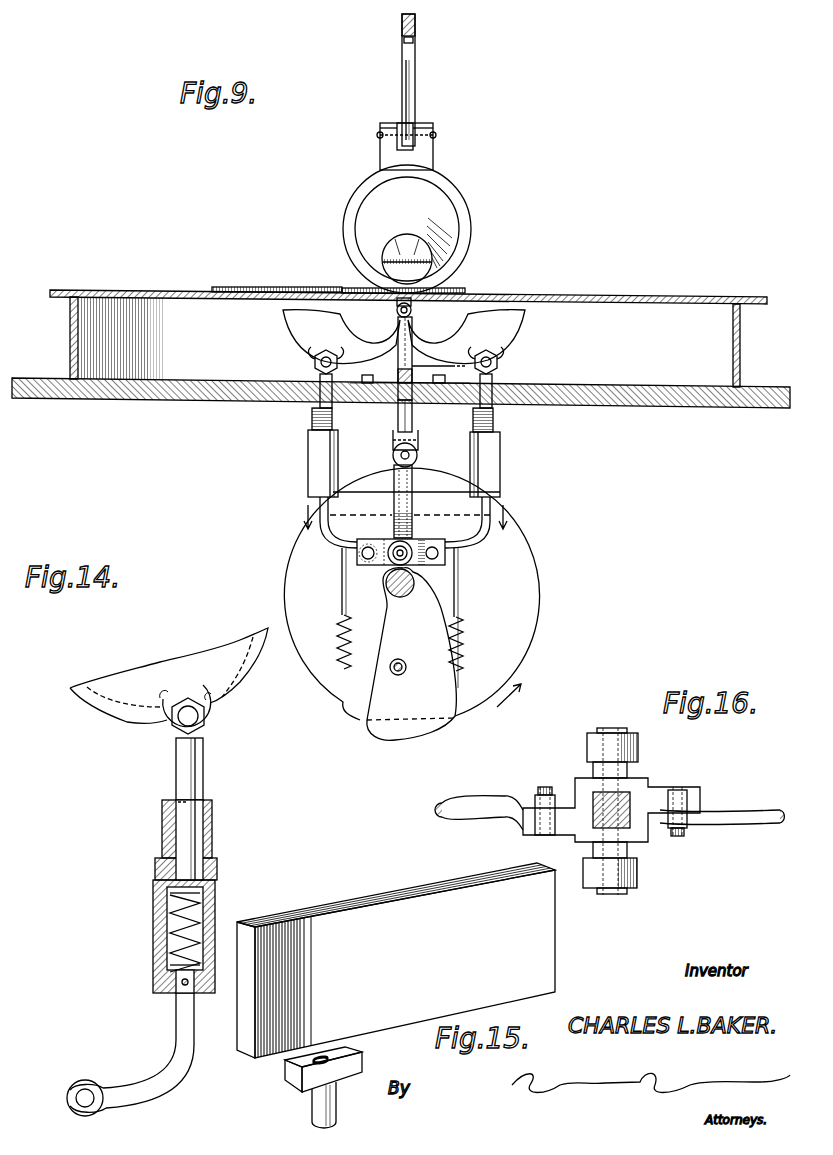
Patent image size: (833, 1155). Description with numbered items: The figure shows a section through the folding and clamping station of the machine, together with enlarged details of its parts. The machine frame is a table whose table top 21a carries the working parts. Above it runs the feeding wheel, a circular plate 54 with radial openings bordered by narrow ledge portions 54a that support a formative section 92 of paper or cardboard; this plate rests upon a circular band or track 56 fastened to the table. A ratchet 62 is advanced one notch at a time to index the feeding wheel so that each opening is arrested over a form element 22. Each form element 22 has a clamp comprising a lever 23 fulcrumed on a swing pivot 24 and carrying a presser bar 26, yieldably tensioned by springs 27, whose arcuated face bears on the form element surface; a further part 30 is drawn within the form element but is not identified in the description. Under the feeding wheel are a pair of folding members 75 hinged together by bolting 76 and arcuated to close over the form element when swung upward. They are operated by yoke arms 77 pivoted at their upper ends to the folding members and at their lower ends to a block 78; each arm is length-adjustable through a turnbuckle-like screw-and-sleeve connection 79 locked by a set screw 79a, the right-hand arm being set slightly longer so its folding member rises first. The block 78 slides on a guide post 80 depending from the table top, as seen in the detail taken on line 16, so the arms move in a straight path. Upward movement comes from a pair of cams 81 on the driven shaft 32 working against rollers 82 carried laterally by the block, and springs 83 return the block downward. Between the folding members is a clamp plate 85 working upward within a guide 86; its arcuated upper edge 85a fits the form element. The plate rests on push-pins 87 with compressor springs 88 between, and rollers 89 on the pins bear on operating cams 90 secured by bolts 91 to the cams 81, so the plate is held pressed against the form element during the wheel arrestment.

In FIG. 9, the section line 16 is at (399, 517).
In FIG. 9, the table top 21a is at (50, 388).
In FIG. 9, the form element 22 is at (430, 200).
In FIG. 9, the lever 23 is at (416, 25).
In FIG. 9, the swing pivot 24 is at (434, 133).
In FIG. 9, the presser bar 26 is at (415, 58).
In FIG. 9, the spring 27 is at (403, 42).
In FIG. 9, the ball 30 is at (388, 270).
In FIG. 9, the driven shaft 32 is at (402, 598).
In FIG. 9, the circular plate 54 is at (708, 298).
In FIG. 9, the ledge portion 54a is at (470, 297).
In FIG. 9, the circular band or track 56 is at (741, 348).
In FIG. 9, the ratchet 62 is at (413, 545).
In FIG. 9, the folding member 75 is at (295, 325).
In FIG. 14, the folding member 75 is at (232, 683).
In FIG. 9, the bolting 76 is at (412, 307).
In FIG. 9, the yoke arm 77 is at (315, 367).
In FIG. 14, the yoke arm 77 is at (185, 770).
In FIG. 16, the yoke arm 77 is at (488, 805).
In FIG. 9, the block 78 is at (395, 539).
In FIG. 16, the block 78 is at (640, 786).
In FIG. 9, the screw-and-sleeve connection 79 is at (310, 473).
In FIG. 14, the screw-and-sleeve connection 79 is at (155, 908).
In FIG. 9, the set screw 79a is at (477, 442).
In FIG. 14, the set screw 79a is at (210, 873).
In FIG. 9, the guide post 80 is at (410, 508).
In FIG. 16, the guide post 80 is at (594, 792).
In FIG. 9, the cam 81 is at (405, 735).
In FIG. 16, the roller 82 is at (622, 746).
In FIG. 9, the spring 83 is at (338, 635).
In FIG. 9, the clamp plate 85 is at (401, 356).
In FIG. 15, the clamp plate 85 is at (387, 914).
In FIG. 15, the upper edge 85a is at (316, 913).
In FIG. 9, the guide 86 is at (416, 367).
In FIG. 9, the push-pin 87 is at (413, 413).
In FIG. 15, the push-pin 87 is at (332, 1097).
In FIG. 9, the compressor spring 88 is at (398, 377).
In FIG. 15, the compressor spring 88 is at (332, 1060).
In FIG. 9, the roller 89 is at (394, 457).
In FIG. 9, the operating cam 90 is at (522, 595).
In FIG. 9, the bolt 91 is at (406, 670).
In FIG. 9, the formative section 92 is at (464, 296).